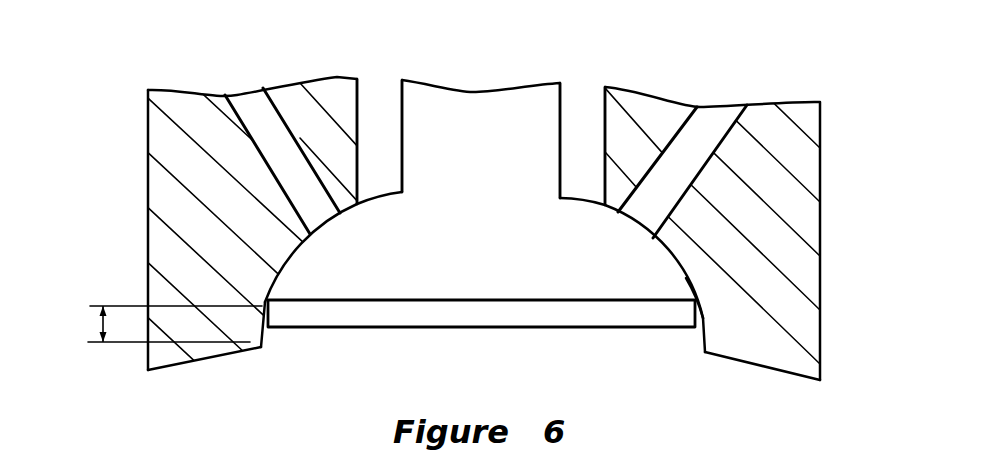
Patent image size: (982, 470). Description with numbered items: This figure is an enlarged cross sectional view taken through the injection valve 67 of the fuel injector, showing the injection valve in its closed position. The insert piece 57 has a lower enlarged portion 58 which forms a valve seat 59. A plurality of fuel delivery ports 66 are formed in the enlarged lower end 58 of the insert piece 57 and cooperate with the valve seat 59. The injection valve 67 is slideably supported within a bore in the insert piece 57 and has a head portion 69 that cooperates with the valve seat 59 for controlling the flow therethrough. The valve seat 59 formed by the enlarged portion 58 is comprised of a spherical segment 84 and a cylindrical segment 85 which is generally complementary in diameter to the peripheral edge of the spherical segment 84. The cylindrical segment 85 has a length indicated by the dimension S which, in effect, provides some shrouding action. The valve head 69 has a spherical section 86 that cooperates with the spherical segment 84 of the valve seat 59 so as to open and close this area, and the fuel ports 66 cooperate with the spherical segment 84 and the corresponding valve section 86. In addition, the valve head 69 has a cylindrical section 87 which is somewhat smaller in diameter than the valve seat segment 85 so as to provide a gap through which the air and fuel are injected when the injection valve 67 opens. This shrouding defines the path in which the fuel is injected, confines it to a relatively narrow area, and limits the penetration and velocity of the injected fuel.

The insert piece 57 is at (826, 182).
The lower enlarged portion 58 is at (822, 342).
The valve seat 59 is at (670, 283).
The fuel delivery ports 66 is at (268, 104).
The injection valve 67 is at (574, 106).
The head portion 69 is at (470, 292).
The spherical segment 84 is at (679, 266).
The cylindrical segment 85 is at (708, 354).
The spherical section 86 is at (373, 196).
The cylindrical section 87 is at (259, 323).
The dimension S is at (102, 323).